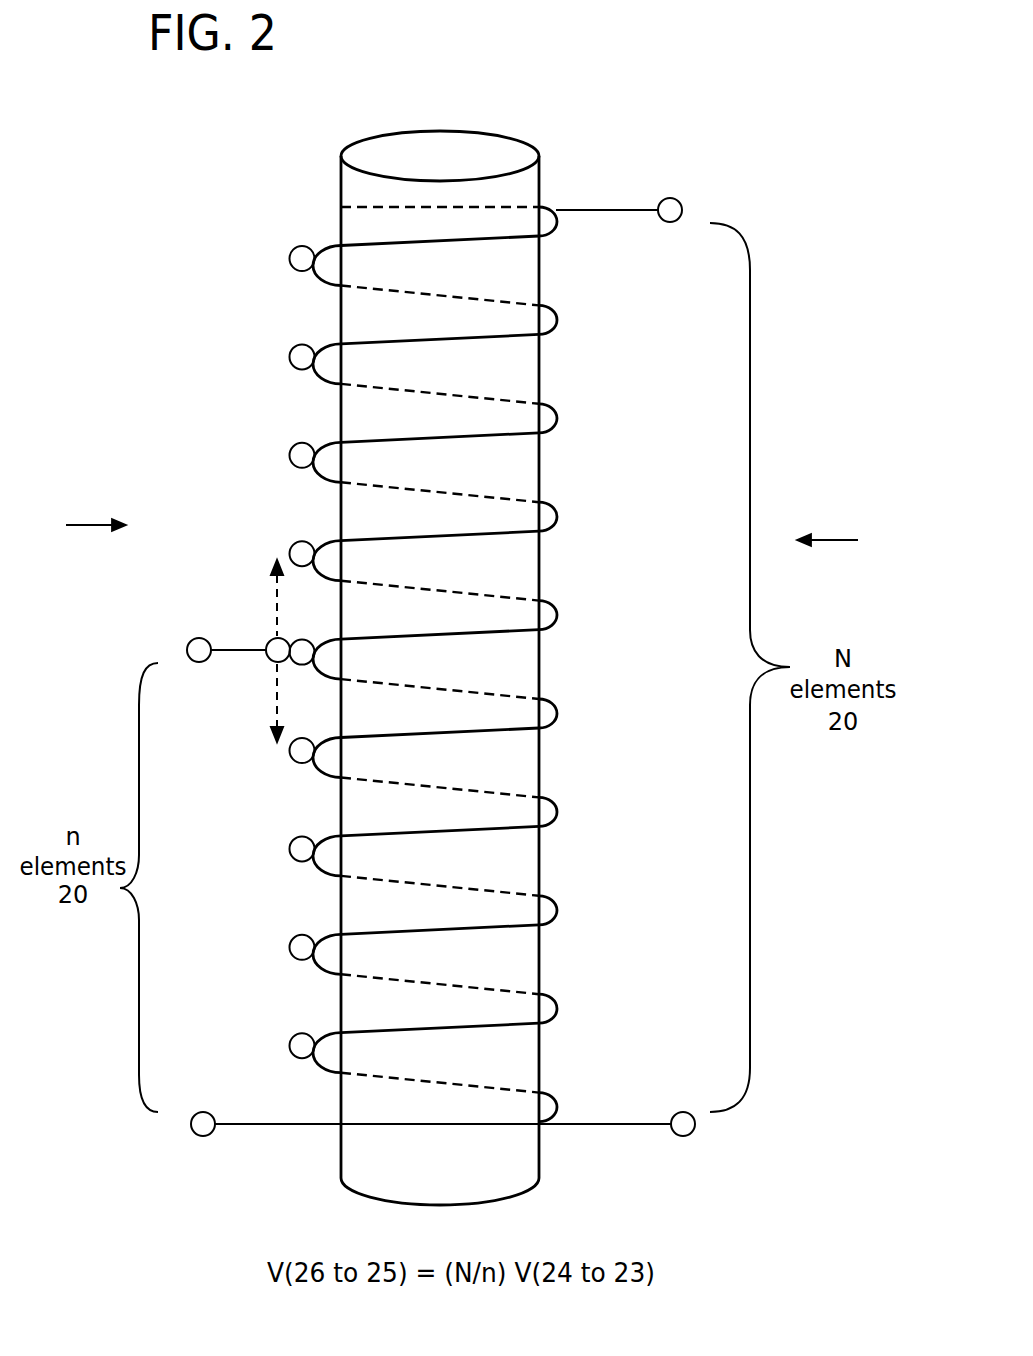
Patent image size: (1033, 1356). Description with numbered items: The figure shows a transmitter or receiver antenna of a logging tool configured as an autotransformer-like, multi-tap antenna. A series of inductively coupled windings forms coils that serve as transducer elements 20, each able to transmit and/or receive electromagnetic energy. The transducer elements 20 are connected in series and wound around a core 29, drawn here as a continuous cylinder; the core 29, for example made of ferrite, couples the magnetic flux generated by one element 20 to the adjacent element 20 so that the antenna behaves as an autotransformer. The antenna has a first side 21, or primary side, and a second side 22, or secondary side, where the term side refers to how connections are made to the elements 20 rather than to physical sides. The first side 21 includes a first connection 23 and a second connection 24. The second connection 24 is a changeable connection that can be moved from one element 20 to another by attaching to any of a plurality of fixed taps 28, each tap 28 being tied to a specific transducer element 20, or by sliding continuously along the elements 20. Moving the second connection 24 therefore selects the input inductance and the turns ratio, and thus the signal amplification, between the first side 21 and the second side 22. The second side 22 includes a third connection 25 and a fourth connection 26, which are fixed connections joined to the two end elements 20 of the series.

The transducer elements 20 is at (557, 510).
The first side 21 is at (74, 523).
The second side 22 is at (855, 533).
The first connection 23 is at (191, 1124).
The second connection 24 is at (187, 647).
The third connection 25 is at (695, 1126).
The fourth connection 26 is at (682, 206).
The fixed taps 28 is at (293, 267).
The core 29 is at (497, 143).